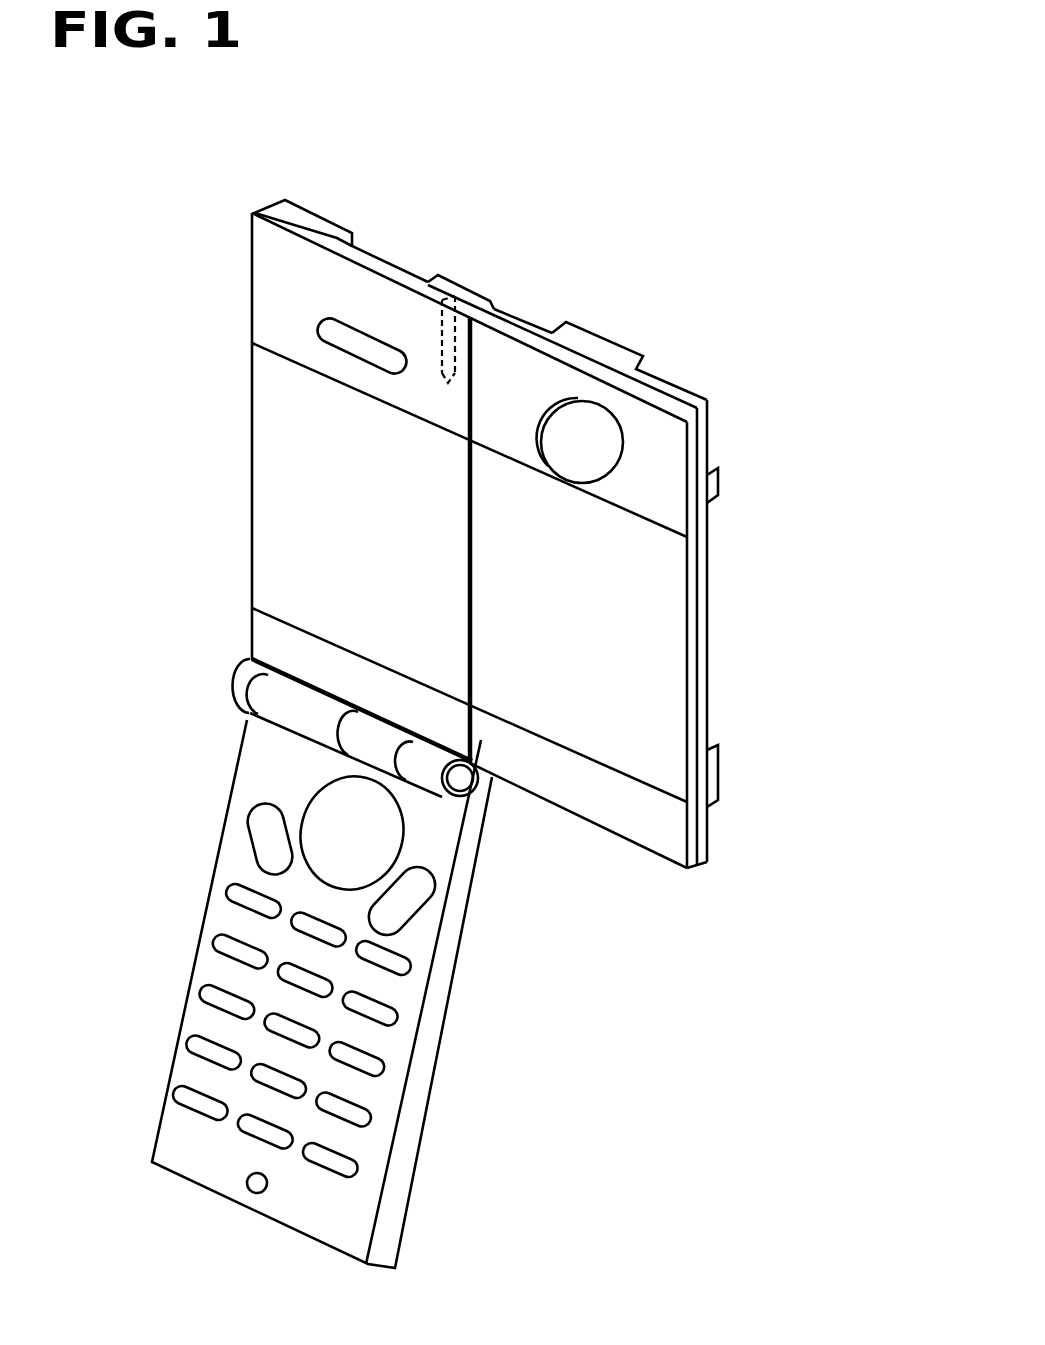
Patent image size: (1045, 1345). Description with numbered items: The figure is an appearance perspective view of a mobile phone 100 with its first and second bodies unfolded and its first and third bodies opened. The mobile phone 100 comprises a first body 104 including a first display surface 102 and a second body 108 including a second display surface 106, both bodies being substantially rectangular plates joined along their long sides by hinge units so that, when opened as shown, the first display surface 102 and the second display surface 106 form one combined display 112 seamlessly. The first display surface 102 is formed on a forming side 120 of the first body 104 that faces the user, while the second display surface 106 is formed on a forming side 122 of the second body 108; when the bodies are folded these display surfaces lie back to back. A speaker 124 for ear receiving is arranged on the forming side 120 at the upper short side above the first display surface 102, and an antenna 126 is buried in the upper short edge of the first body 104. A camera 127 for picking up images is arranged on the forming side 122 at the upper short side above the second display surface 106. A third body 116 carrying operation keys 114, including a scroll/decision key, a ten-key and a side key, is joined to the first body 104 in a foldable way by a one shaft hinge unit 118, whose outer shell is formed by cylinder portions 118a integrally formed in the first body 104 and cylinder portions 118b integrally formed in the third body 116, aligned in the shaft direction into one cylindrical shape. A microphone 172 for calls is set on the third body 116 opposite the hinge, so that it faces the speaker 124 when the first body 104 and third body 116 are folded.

The mobile phone 100 is at (752, 292).
The first display surface 102 is at (414, 437).
The first body 104 is at (273, 260).
The second display surface 106 is at (516, 480).
The second body 108 is at (707, 517).
The combined display 112 is at (652, 243).
The operation keys 114 is at (398, 1008).
The third body 116 is at (167, 1157).
The one shaft hinge unit 118 is at (226, 665).
The cylinder portions 118a is at (422, 763).
The cylinder portions 118b is at (362, 727).
The forming side 120 is at (263, 640).
The forming side 122 is at (660, 823).
The speaker 124 is at (312, 322).
The antenna 126 is at (468, 296).
The camera 127 is at (597, 445).
The microphone 172 is at (248, 1182).